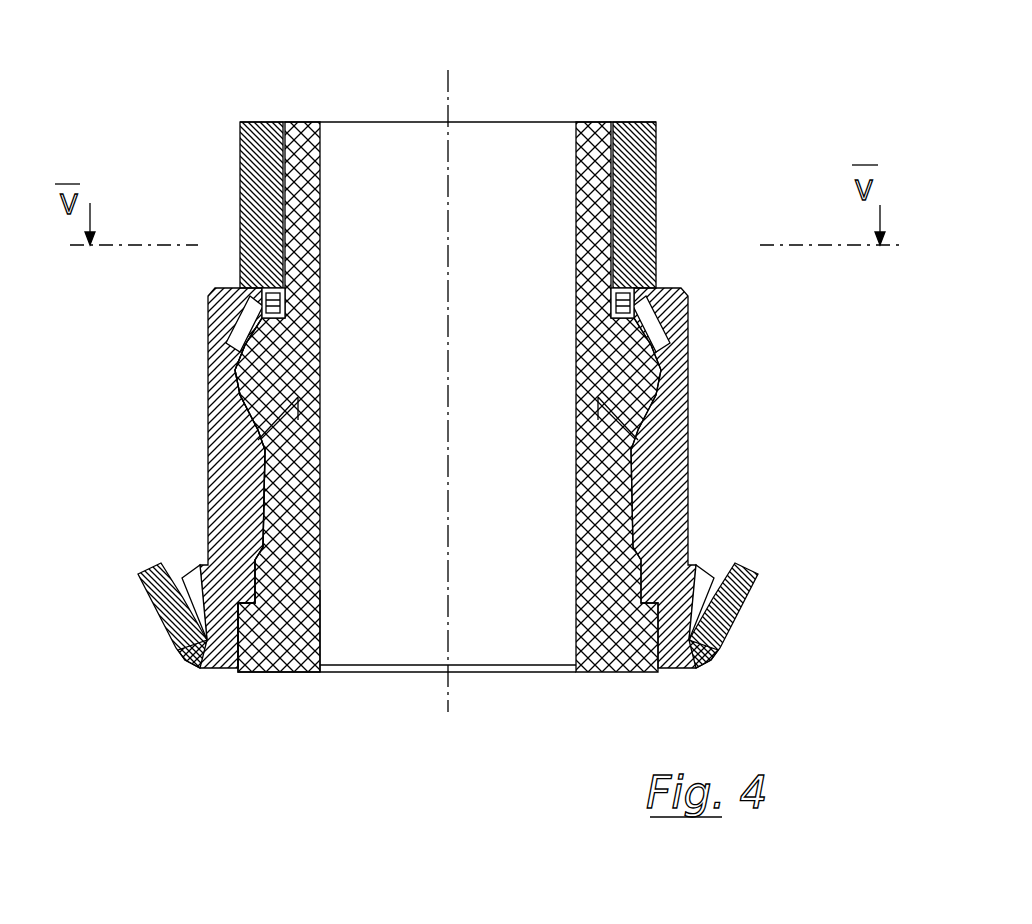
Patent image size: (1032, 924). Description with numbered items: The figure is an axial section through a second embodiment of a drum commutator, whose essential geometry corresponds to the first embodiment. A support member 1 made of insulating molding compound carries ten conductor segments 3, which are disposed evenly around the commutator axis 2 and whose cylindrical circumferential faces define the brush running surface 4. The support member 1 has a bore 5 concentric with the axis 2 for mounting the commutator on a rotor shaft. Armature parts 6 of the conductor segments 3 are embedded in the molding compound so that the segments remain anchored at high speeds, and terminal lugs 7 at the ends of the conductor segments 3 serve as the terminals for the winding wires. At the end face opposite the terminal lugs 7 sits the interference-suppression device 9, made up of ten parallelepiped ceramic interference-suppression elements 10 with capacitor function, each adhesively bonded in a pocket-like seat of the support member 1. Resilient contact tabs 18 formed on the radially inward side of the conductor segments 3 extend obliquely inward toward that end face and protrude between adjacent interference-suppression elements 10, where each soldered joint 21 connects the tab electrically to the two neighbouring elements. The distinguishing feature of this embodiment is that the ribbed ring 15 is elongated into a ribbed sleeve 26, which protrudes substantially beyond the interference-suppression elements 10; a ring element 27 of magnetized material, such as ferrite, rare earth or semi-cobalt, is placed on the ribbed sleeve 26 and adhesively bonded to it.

The support member 1 is at (295, 637).
The commutator axis 2 is at (450, 700).
The conductor segments 3 is at (235, 488).
The brush running surface 4 is at (208, 424).
The bore 5 is at (326, 588).
The armature parts 6 is at (285, 583).
The terminal lugs 7 is at (165, 615).
The interference-suppression device 9 is at (252, 300).
The interference-suppression elements 10 is at (625, 290).
The ribbed ring 15 is at (588, 300).
The contact tabs 18 is at (640, 313).
The soldered joint 21 is at (632, 320).
The ribbed sleeve 26 is at (300, 200).
The ring element 27 is at (240, 183).